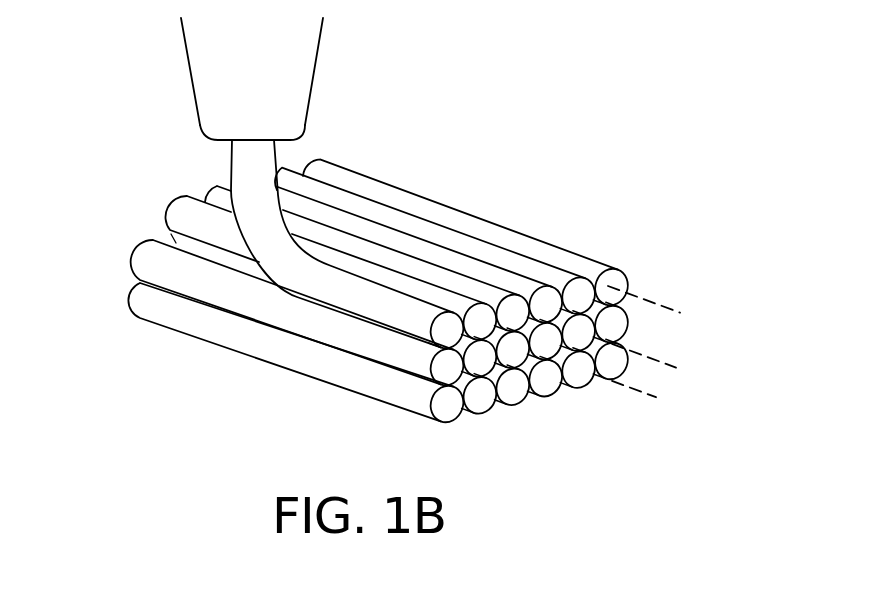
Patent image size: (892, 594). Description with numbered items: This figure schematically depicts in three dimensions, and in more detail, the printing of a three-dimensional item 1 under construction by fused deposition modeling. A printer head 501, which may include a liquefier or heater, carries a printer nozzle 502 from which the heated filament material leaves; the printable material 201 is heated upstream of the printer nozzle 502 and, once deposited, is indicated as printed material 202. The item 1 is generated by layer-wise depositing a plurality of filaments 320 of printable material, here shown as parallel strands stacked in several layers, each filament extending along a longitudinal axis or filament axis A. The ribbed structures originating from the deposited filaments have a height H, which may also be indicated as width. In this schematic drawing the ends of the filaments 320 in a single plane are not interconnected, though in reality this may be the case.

The printer head 501 is at (205, 50).
The printer nozzle 502 is at (222, 141).
The printable material 201 is at (263, 163).
The printed material 202 is at (310, 363).
The filament 320 is at (222, 333).
The 3D item 1 is at (506, 217).
The longitudinal axis A is at (646, 296).
The height H is at (672, 366).